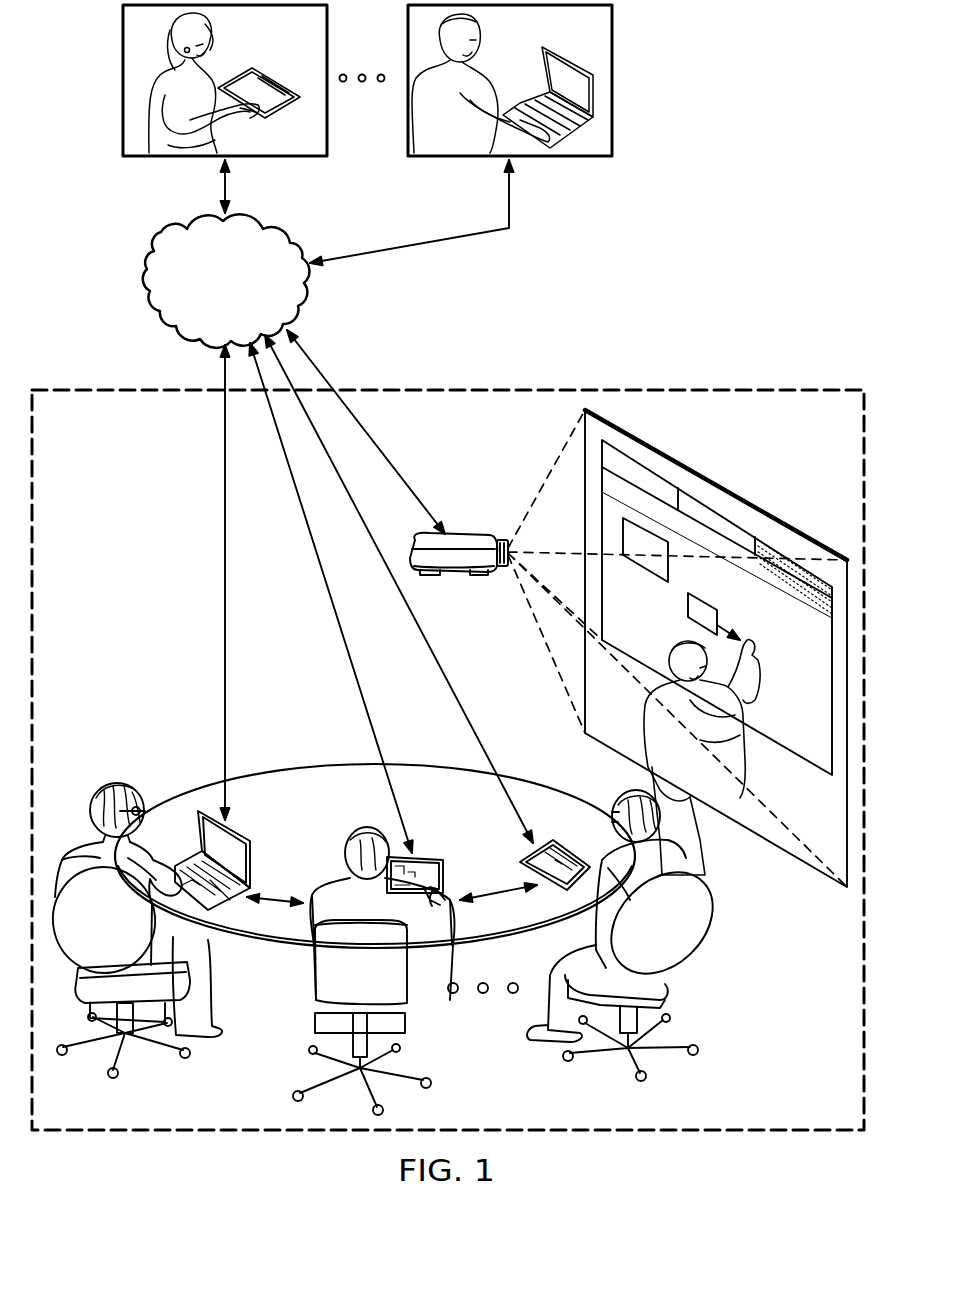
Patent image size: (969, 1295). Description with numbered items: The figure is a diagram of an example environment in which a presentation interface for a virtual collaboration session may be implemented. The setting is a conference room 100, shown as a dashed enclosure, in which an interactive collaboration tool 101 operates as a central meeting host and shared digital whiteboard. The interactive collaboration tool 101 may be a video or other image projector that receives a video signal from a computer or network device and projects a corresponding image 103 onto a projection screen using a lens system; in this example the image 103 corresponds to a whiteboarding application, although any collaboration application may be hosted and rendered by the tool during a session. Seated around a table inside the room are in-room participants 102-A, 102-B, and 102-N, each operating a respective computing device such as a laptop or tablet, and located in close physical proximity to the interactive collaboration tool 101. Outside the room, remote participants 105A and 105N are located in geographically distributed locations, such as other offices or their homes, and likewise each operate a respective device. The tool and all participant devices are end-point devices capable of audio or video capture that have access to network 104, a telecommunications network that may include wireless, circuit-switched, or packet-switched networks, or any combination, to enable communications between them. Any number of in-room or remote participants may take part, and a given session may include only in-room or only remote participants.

The conference room 100 is at (642, 385).
The interactive collaboration tool 101 is at (460, 573).
The in-room participant 102-A is at (107, 783).
The in-room participant 102-B is at (312, 967).
The in-room participant 102-N is at (683, 863).
The image 103 is at (718, 486).
The network 104 is at (246, 293).
The remote participant 105A is at (123, 81).
The remote participant 105N is at (612, 82).